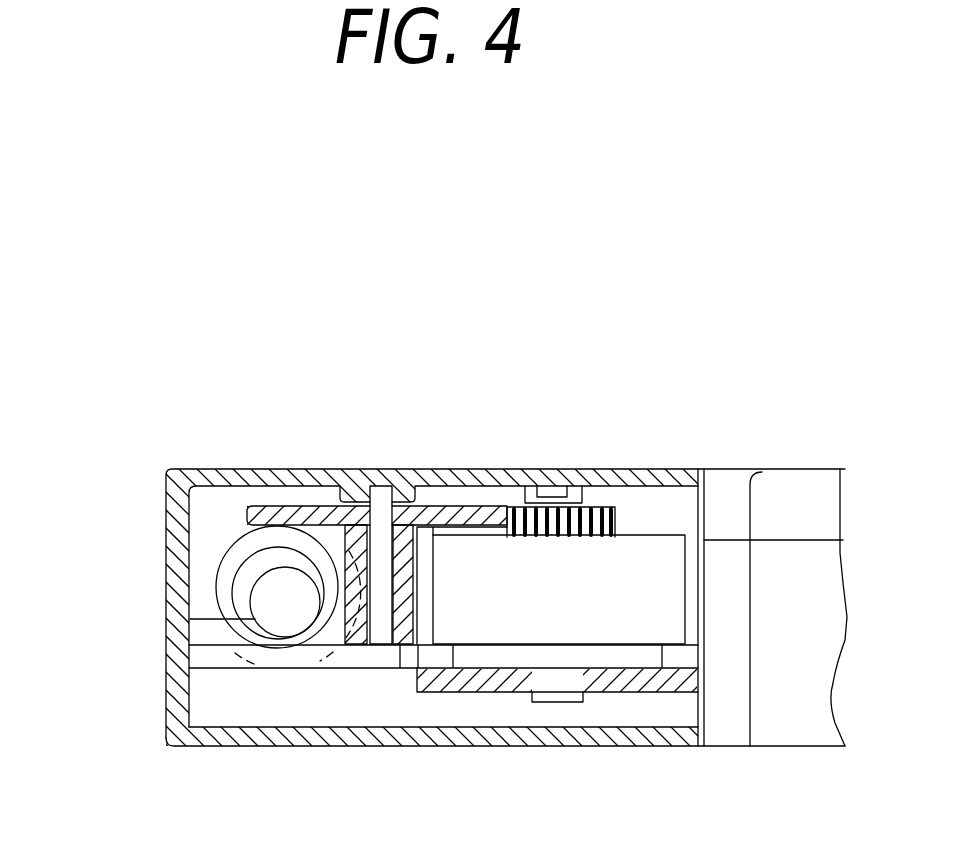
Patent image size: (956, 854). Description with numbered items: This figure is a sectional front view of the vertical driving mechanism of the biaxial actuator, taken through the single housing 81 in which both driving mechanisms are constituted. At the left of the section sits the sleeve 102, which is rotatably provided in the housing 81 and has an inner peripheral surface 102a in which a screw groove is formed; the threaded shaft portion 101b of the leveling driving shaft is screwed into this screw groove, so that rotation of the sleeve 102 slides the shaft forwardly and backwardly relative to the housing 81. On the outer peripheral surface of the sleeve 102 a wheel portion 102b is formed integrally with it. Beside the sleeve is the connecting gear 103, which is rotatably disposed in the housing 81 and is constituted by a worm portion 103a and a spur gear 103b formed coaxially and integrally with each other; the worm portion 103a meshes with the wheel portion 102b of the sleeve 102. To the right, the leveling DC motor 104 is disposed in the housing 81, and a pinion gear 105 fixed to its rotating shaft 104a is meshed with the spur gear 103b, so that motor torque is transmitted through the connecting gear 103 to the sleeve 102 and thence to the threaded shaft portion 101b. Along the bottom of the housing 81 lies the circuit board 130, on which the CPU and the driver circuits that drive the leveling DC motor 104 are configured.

The housing 81 is at (662, 470).
The threaded shaft portion 101b is at (288, 617).
The sleeve 102 is at (217, 582).
The inner peripheral surface 102a is at (270, 589).
The wheel portion 102b is at (250, 540).
The connecting gear 103 is at (257, 510).
The worm portion 103a is at (410, 655).
The spur gear 103b is at (278, 513).
The leveling DC motor 104 is at (613, 623).
The rotating shaft 104a is at (553, 495).
The pinion gear 105 is at (526, 486).
The circuit board 130 is at (518, 692).